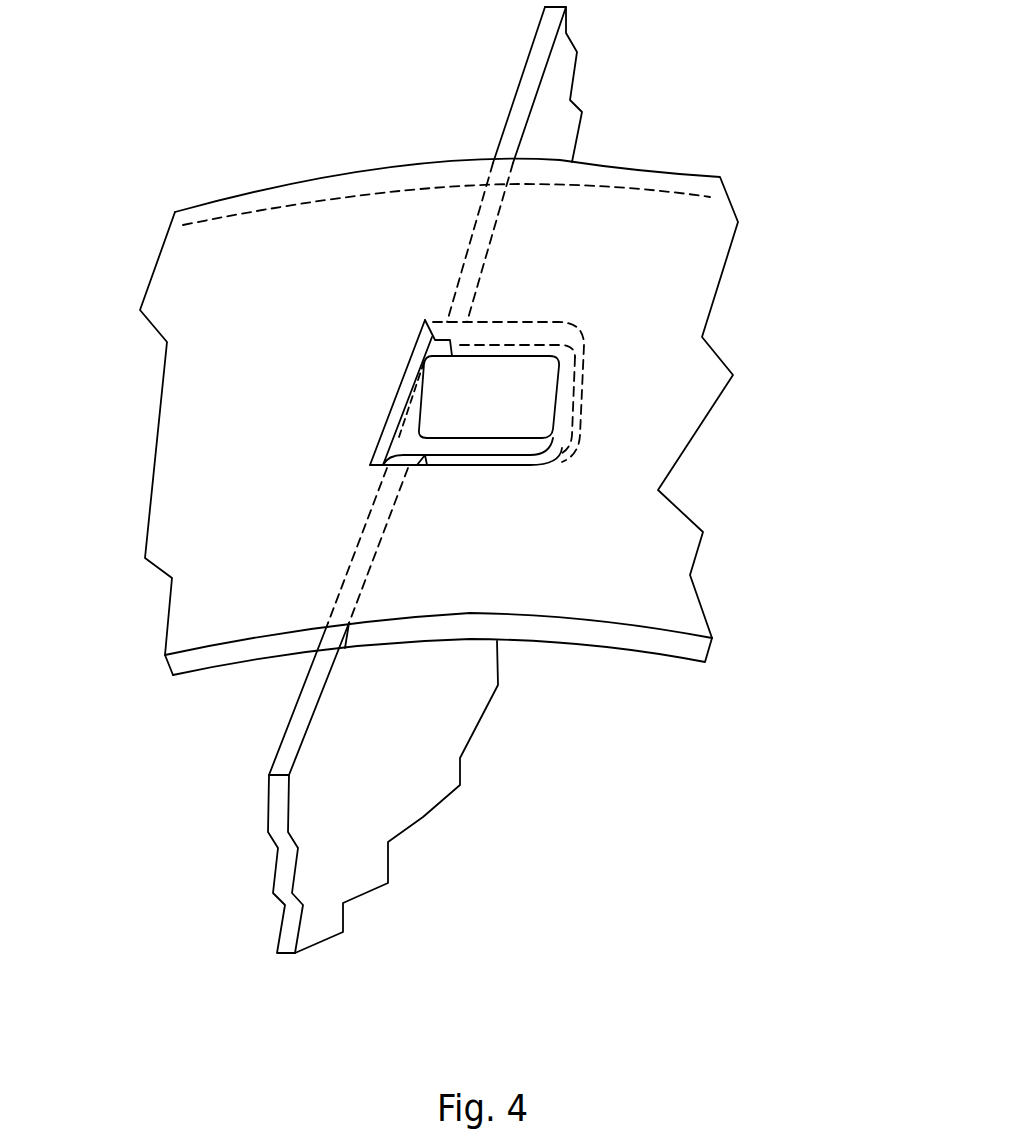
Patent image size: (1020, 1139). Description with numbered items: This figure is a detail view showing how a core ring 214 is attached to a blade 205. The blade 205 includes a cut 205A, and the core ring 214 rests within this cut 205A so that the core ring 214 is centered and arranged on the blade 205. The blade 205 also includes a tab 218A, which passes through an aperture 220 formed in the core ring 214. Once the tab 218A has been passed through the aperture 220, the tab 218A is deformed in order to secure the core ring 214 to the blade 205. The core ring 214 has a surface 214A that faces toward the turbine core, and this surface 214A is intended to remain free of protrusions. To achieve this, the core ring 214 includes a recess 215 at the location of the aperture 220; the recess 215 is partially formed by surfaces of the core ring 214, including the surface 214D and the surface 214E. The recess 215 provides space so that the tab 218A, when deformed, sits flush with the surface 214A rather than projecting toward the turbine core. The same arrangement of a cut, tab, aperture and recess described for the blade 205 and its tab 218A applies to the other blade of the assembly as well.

The blade 205 is at (352, 734).
The cut 205A is at (504, 234).
The core ring 214 is at (613, 478).
The surface 214A is at (433, 587).
The surface 214D is at (508, 462).
The surface 214E is at (537, 335).
The recess 215 is at (589, 395).
The tab 218A is at (463, 384).
The aperture 220 is at (425, 320).